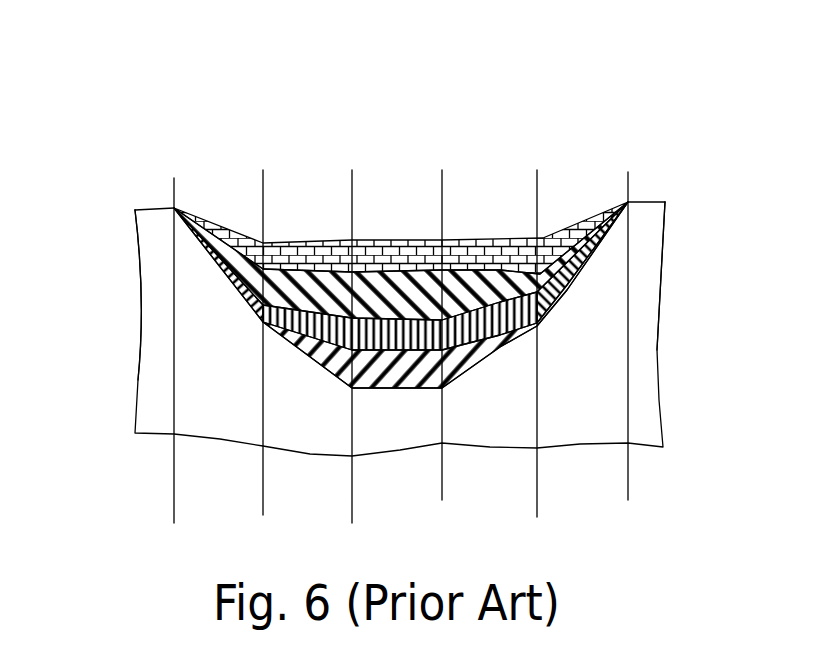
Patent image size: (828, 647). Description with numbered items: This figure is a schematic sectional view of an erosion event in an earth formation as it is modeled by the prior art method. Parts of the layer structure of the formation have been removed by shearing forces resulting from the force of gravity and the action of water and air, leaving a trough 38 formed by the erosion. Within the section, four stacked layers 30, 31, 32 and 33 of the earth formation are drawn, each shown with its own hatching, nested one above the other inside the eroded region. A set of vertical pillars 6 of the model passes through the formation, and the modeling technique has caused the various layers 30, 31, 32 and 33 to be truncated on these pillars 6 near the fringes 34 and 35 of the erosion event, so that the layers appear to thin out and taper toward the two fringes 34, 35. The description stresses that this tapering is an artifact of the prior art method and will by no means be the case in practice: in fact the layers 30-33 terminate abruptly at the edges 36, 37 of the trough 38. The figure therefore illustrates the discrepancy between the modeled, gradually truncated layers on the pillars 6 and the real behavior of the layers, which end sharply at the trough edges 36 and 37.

The pillars 6 is at (263, 503).
The layer 30 is at (298, 260).
The layer 31 is at (367, 305).
The layer 32 is at (518, 302).
The layer 33 is at (461, 355).
The fringe 34 is at (175, 209).
The fringe 35 is at (627, 203).
The edge of the trough 36 is at (240, 278).
The edge of the trough 37 is at (573, 279).
The trough 38 is at (514, 80).